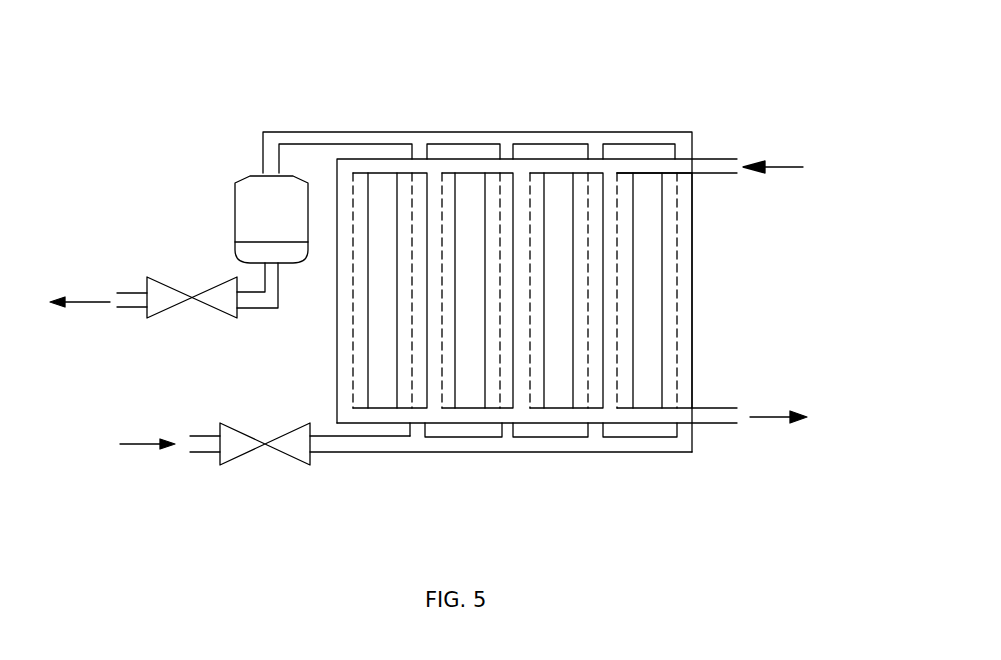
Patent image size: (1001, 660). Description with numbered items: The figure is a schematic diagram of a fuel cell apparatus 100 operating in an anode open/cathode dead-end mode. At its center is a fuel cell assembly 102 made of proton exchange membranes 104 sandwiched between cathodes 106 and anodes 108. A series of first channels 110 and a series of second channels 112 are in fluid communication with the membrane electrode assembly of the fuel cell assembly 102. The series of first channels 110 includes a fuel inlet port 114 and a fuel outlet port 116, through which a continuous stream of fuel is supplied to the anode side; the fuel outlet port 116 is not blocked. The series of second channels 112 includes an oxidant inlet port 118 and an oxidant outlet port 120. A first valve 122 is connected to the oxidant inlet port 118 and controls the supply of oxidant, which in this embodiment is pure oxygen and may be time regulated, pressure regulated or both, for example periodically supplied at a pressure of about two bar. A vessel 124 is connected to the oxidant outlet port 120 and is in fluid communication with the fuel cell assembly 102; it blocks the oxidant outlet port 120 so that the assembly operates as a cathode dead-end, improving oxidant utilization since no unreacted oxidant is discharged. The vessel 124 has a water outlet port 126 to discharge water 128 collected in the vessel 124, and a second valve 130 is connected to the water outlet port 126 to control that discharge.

The fuel cell apparatus 100 is at (327, 56).
The fuel cell assembly 102 is at (490, 108).
The proton exchange membranes 104 is at (647, 220).
The cathodes 106 is at (493, 362).
The anodes 108 is at (535, 350).
The series of first channels 110 is at (434, 172).
The series of second channels 112 is at (503, 443).
The fuel inlet port 114 is at (703, 172).
The fuel outlet port 116 is at (714, 417).
The oxidant inlet port 118 is at (364, 441).
The oxidant outlet port 120 is at (272, 139).
The first valve 122 is at (233, 450).
The vessel 124 is at (233, 220).
The water outlet port 126 is at (262, 300).
The water 128 is at (265, 252).
The second valve 130 is at (160, 300).